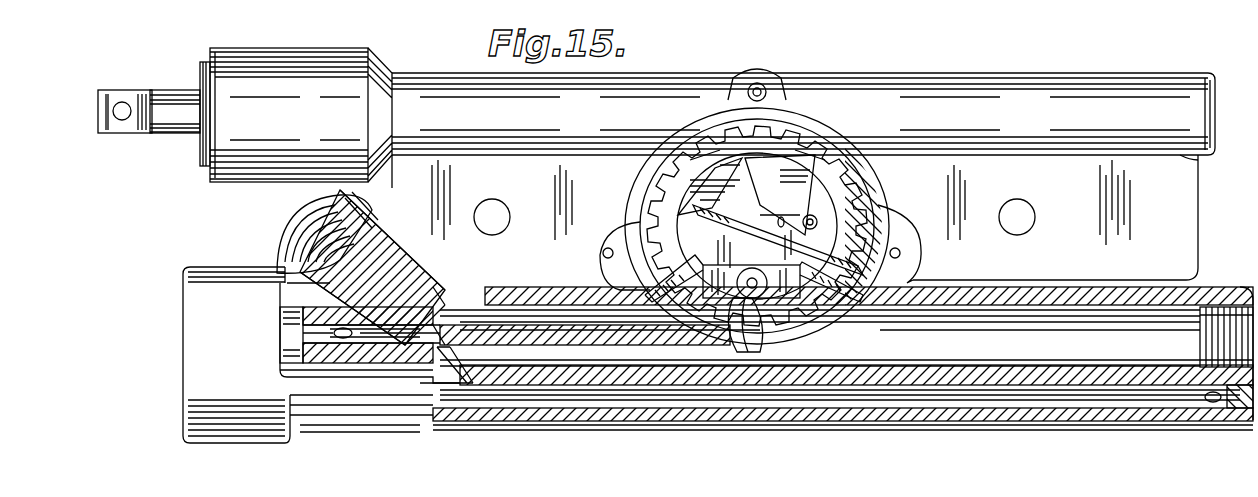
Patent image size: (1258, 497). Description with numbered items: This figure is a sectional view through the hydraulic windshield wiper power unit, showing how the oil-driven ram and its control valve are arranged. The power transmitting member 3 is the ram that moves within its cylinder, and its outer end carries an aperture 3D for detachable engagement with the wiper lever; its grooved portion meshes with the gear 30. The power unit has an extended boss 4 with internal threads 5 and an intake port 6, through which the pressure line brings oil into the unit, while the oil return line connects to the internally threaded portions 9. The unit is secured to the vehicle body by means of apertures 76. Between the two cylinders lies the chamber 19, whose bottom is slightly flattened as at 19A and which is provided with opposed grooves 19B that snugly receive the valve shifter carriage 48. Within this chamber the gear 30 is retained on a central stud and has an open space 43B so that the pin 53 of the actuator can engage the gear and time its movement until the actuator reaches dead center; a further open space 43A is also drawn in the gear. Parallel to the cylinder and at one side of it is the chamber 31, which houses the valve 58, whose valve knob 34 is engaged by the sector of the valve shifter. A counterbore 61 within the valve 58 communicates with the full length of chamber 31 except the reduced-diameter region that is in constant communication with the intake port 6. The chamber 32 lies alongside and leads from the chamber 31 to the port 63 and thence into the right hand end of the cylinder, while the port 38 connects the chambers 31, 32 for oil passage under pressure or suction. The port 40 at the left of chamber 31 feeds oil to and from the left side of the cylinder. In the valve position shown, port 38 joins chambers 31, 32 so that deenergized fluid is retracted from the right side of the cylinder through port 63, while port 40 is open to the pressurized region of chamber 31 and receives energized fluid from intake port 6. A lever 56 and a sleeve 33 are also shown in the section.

The power transmitting member 3 is at (172, 100).
The aperture 3D is at (100, 125).
The extended boss 4 is at (283, 218).
The internal threads 5 is at (355, 212).
The intake port 6 is at (380, 287).
The internally threaded portions 9 is at (1228, 305).
The chamber 19 is at (848, 187).
The flattened bottom 19A is at (760, 347).
The opposed grooves 19B is at (597, 283).
The gear 30 is at (813, 157).
The chamber 31 is at (846, 353).
The chamber 32 is at (1068, 395).
The sleeve 33 is at (492, 333).
The valve knob 34 is at (737, 353).
The port 38 is at (475, 385).
The port 40 is at (343, 340).
The first sector plate 43A is at (707, 187).
The open space 43B is at (787, 183).
The valve shifter carriage 48 is at (770, 236).
The pin 53 is at (815, 226).
The lever arm 56 is at (808, 222).
The valve 58 is at (387, 357).
The counterbore 61 is at (290, 340).
The port 63 is at (1212, 402).
The apertures 76 is at (528, 200).